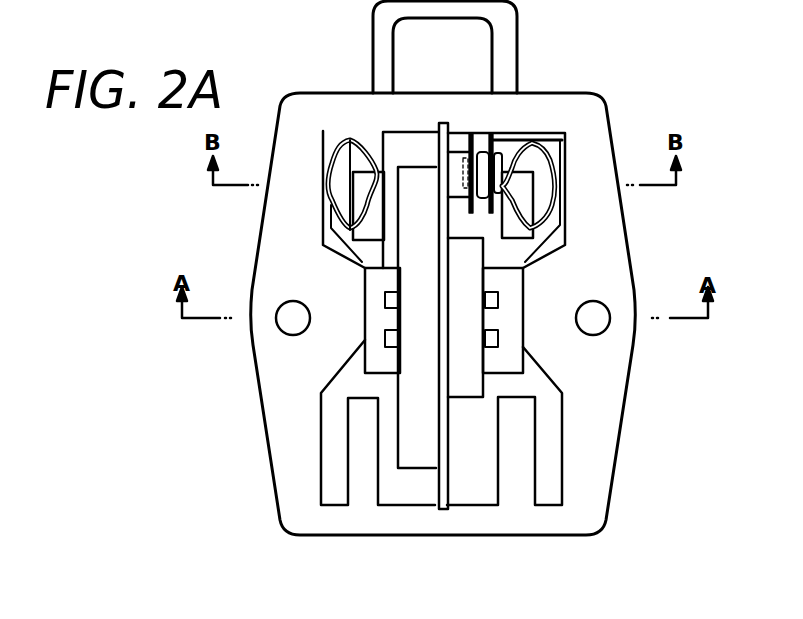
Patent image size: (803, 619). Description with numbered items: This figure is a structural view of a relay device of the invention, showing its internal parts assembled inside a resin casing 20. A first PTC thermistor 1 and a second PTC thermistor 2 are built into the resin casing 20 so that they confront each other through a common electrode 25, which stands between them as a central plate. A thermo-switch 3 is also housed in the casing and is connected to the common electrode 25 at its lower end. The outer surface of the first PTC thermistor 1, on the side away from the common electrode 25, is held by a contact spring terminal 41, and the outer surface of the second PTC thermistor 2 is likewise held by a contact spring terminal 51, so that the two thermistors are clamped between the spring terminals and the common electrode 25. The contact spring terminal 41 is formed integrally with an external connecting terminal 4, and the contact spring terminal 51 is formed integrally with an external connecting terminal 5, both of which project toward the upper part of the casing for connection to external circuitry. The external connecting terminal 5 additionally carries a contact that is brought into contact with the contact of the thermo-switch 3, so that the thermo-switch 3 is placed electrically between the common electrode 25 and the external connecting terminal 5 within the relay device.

The first PTC thermistor 1 is at (402, 468).
The second PTC thermistor 2 is at (485, 385).
The thermo-switch 3 is at (476, 145).
The external connecting terminal 4 is at (347, 150).
The external connecting terminal 5 is at (556, 153).
The resin casing 20 is at (283, 458).
The common electrode 25 is at (442, 510).
The contact spring terminal 41 is at (365, 307).
The contact spring terminal 51 is at (512, 308).